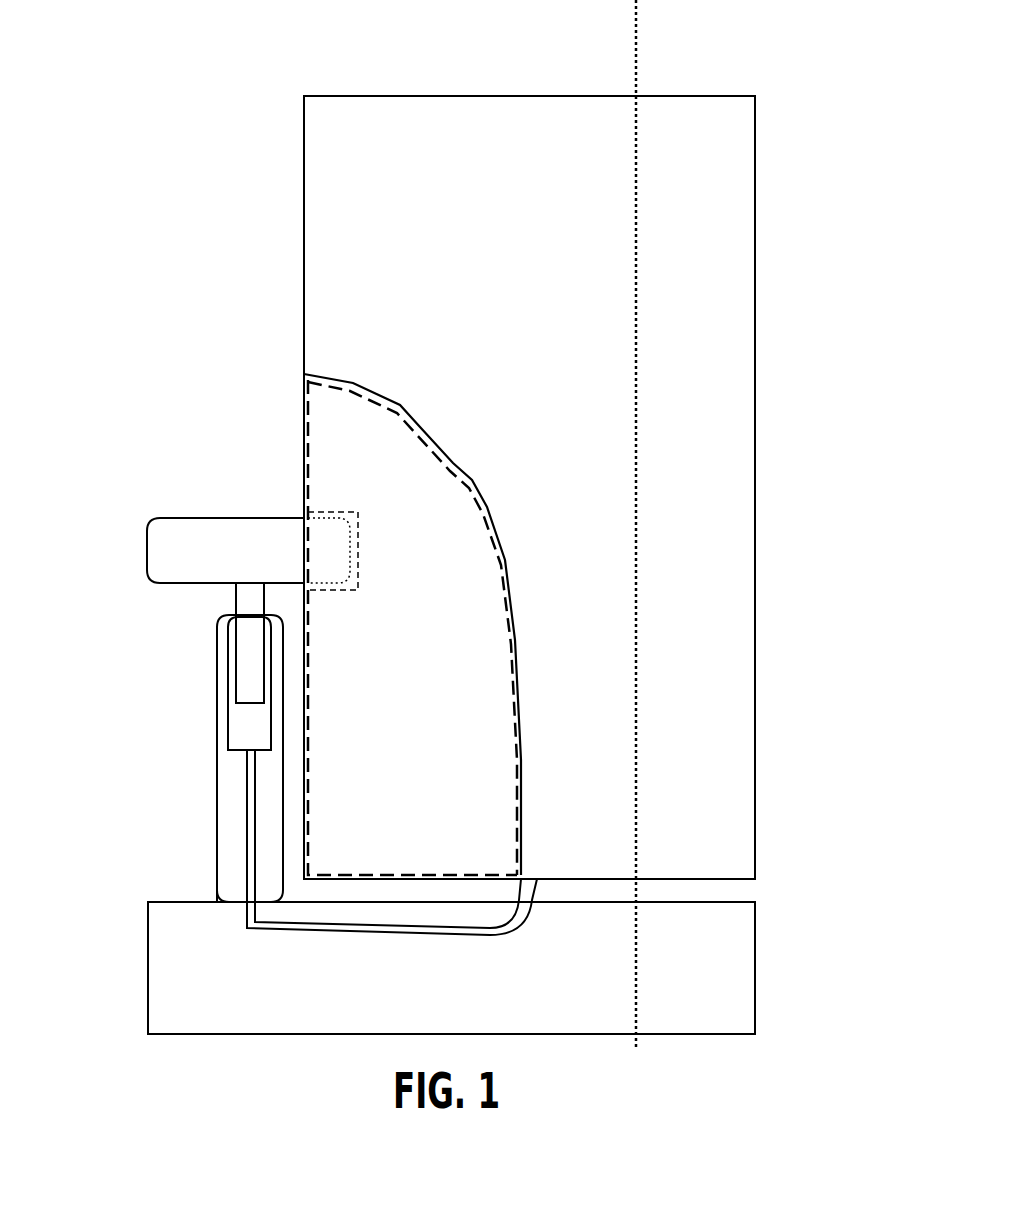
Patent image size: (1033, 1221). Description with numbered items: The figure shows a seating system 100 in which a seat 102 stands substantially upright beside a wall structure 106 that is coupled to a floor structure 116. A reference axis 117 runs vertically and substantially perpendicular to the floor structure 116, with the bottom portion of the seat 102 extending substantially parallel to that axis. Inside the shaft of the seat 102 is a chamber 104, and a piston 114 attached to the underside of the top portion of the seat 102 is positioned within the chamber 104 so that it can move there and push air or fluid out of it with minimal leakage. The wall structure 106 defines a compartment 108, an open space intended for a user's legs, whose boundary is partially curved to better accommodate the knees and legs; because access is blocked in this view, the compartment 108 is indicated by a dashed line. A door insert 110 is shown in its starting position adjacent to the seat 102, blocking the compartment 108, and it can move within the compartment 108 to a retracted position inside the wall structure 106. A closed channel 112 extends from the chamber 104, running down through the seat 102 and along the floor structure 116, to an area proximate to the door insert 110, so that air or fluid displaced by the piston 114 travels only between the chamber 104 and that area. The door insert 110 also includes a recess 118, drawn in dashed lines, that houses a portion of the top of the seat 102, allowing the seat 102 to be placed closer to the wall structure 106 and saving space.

The seating system 100 is at (797, 130).
The seat 102 is at (282, 724).
The chamber 104 is at (247, 732).
The wall structure 106 is at (318, 218).
The compartment 108 is at (419, 699).
The door insert 110 is at (304, 410).
The closed channel 112 is at (356, 775).
The piston 114 is at (253, 615).
The floor structure 116 is at (738, 968).
The reference axis 117 is at (635, 72).
The recess 118 is at (333, 515).